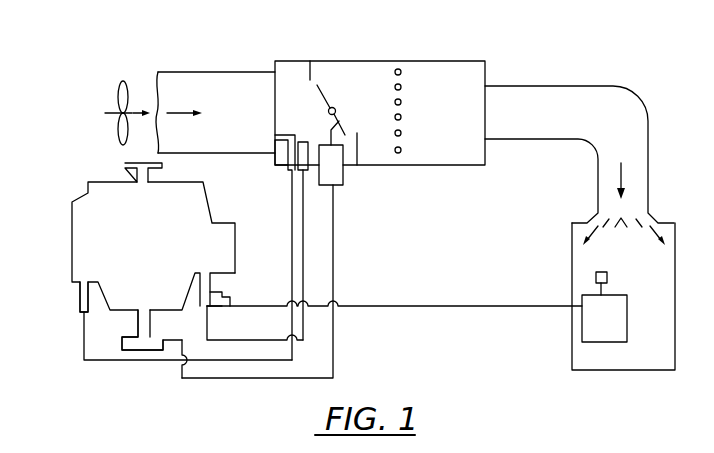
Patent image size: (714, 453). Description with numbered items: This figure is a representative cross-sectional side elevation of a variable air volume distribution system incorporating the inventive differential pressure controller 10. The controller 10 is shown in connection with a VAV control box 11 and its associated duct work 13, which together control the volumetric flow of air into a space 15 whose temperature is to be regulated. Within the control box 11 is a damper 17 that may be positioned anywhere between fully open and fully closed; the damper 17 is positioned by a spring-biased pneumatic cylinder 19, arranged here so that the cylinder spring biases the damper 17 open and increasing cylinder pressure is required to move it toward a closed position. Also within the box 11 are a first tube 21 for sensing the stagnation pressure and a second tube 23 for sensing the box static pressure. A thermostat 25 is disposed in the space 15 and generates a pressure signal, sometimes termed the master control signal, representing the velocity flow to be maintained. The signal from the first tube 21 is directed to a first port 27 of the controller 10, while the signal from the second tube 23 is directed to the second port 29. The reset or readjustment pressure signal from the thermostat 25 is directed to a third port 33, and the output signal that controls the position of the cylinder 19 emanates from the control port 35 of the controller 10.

The controller 10 is at (156, 253).
The VAV control box 11 is at (372, 168).
The duct work 13 is at (233, 69).
The space 15 is at (656, 273).
The damper 17 is at (330, 92).
The spring-biased pneumatic cylinder 19 is at (343, 190).
The first tube 21 is at (272, 140).
The second tube 23 is at (304, 141).
The thermostat 25 is at (596, 278).
The first port 27 is at (80, 316).
The second port 29 is at (210, 308).
The third port 33 is at (228, 292).
The control port 35 is at (178, 334).